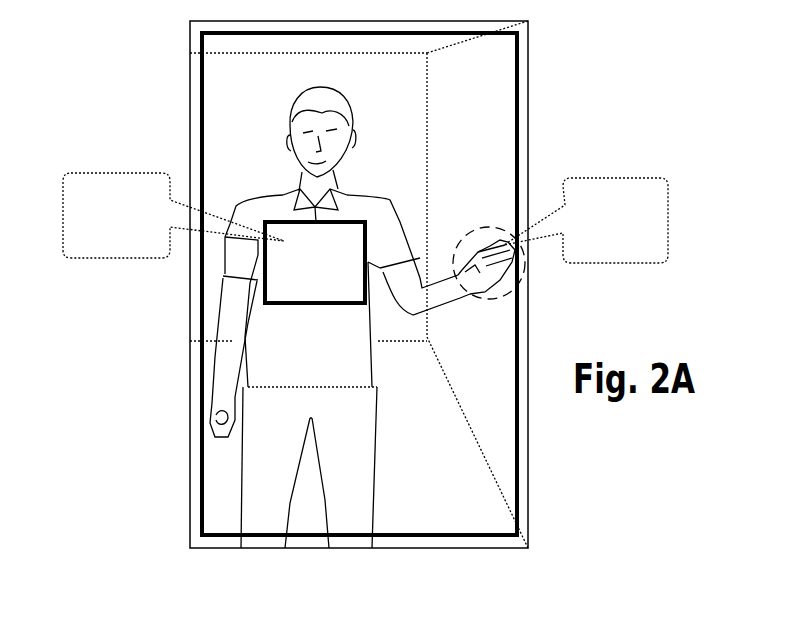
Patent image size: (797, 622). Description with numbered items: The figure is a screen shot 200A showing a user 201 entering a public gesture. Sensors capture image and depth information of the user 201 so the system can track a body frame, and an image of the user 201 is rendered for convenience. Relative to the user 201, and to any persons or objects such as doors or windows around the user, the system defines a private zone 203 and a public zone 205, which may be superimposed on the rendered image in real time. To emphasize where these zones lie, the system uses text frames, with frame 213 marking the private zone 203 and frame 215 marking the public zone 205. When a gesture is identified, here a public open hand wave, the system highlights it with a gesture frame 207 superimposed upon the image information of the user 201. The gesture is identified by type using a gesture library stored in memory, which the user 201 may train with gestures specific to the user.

The screen shot 200A is at (300, 283).
The user 201 is at (263, 197).
The private zone 203 is at (291, 305).
The public zone 205 is at (519, 116).
The gesture frame 207 is at (487, 298).
The text frame 213 is at (88, 181).
The text frame 215 is at (632, 187).